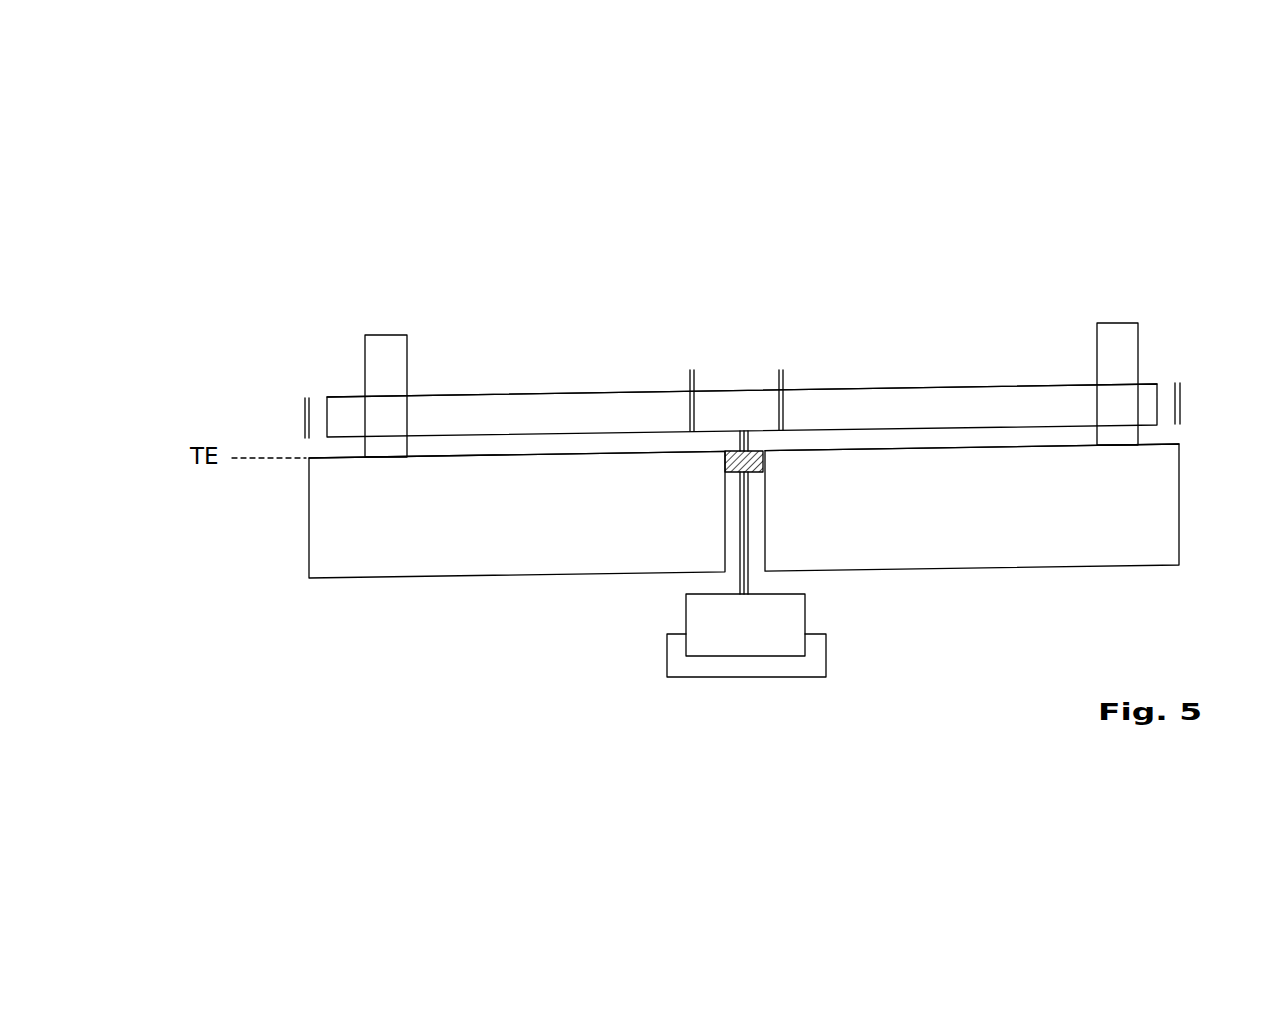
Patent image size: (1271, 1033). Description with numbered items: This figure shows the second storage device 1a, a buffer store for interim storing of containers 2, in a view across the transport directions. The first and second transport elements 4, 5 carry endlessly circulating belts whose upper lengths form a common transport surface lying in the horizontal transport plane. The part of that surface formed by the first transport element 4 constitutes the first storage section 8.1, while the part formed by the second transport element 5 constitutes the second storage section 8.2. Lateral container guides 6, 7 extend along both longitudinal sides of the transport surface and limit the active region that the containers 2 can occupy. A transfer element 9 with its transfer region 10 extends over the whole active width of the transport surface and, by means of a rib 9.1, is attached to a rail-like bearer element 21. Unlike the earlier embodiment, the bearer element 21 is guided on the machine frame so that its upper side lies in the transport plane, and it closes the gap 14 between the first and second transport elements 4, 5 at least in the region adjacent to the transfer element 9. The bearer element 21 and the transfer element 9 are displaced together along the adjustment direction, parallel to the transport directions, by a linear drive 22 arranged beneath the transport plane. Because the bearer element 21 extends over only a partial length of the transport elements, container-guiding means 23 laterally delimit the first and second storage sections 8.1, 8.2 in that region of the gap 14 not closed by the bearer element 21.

The second storage device 1a is at (977, 222).
The containers 2 is at (386, 355).
The first transport element 4 is at (972, 507).
The second transport element 5 is at (517, 514).
The lateral container guide 6 is at (1178, 403).
The lateral container guide 7 is at (305, 417).
The first storage section 8.1 is at (948, 448).
The second storage section 8.2 is at (455, 455).
The transfer element 9 is at (917, 385).
The rib 9.1 is at (738, 432).
The transfer region 10 is at (543, 403).
The gap 14 is at (753, 542).
The bearer element 21 is at (765, 470).
The linear drive 22 is at (697, 625).
The container-guiding means 23 is at (690, 397).